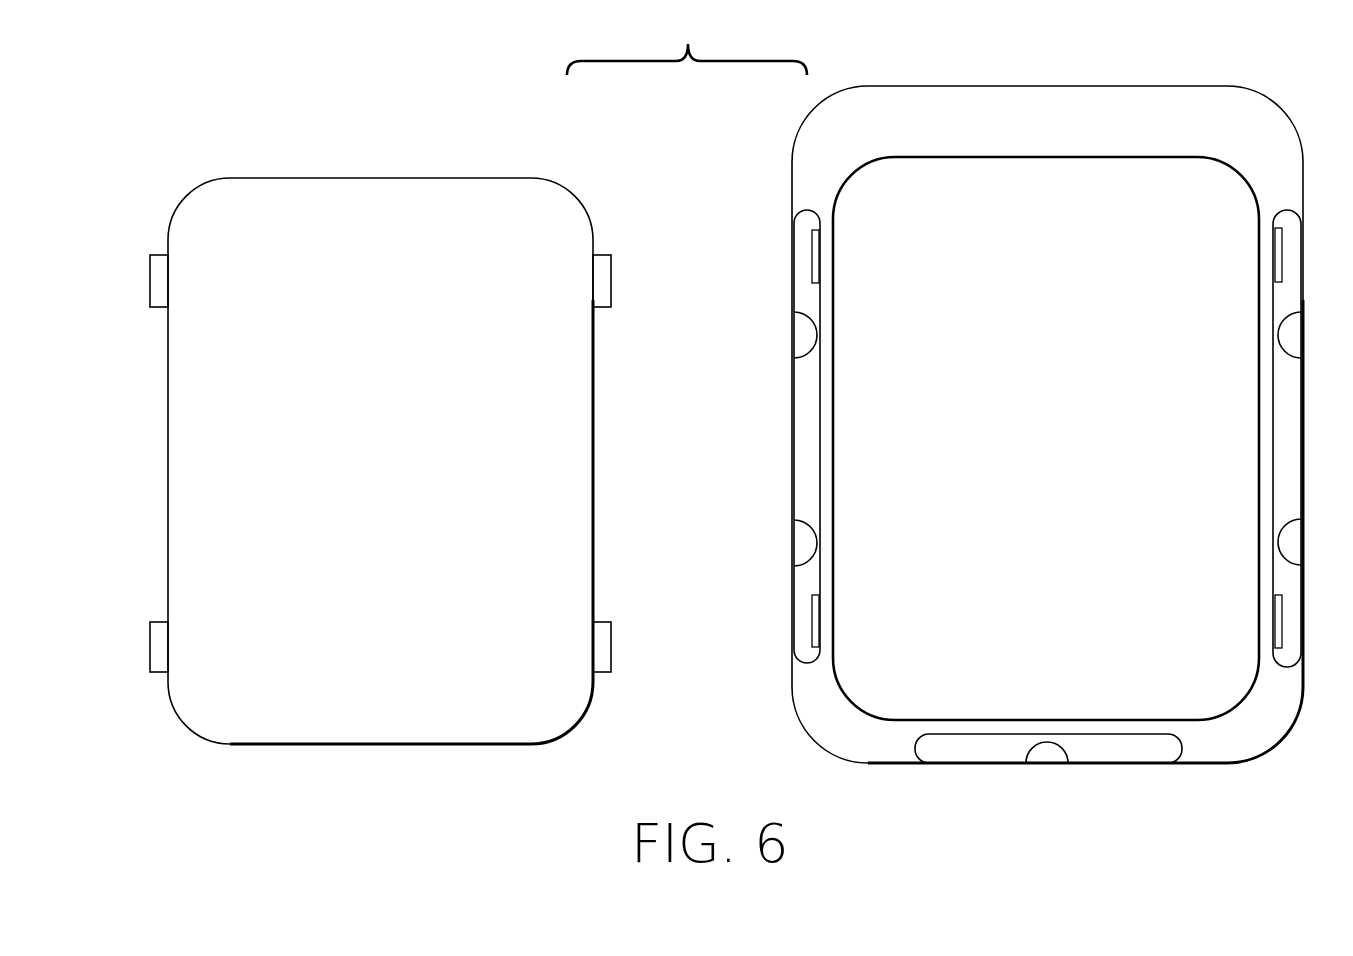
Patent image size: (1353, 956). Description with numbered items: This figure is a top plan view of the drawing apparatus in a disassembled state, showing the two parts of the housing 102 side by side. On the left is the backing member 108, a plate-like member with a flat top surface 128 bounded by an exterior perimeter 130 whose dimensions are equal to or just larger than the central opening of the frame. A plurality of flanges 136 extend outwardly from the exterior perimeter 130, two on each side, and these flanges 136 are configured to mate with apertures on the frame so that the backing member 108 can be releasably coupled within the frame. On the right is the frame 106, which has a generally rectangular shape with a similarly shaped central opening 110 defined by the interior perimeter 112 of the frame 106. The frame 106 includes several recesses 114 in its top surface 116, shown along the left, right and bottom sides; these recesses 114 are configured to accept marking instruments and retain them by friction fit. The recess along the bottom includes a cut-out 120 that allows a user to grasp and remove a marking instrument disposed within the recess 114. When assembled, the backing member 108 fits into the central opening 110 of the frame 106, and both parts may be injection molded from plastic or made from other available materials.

The housing 102 is at (180, 107).
The frame 106 is at (930, 84).
The backing member 108 is at (307, 170).
The central opening 110 is at (1062, 429).
The interior perimeter 112 is at (985, 158).
The recesses 114 is at (808, 455).
The top surface 116 is at (1183, 128).
The cut-out 120 is at (1043, 765).
The top surface 128 is at (398, 470).
The exterior perimeter 130 is at (277, 746).
The flanges 136 is at (158, 280).